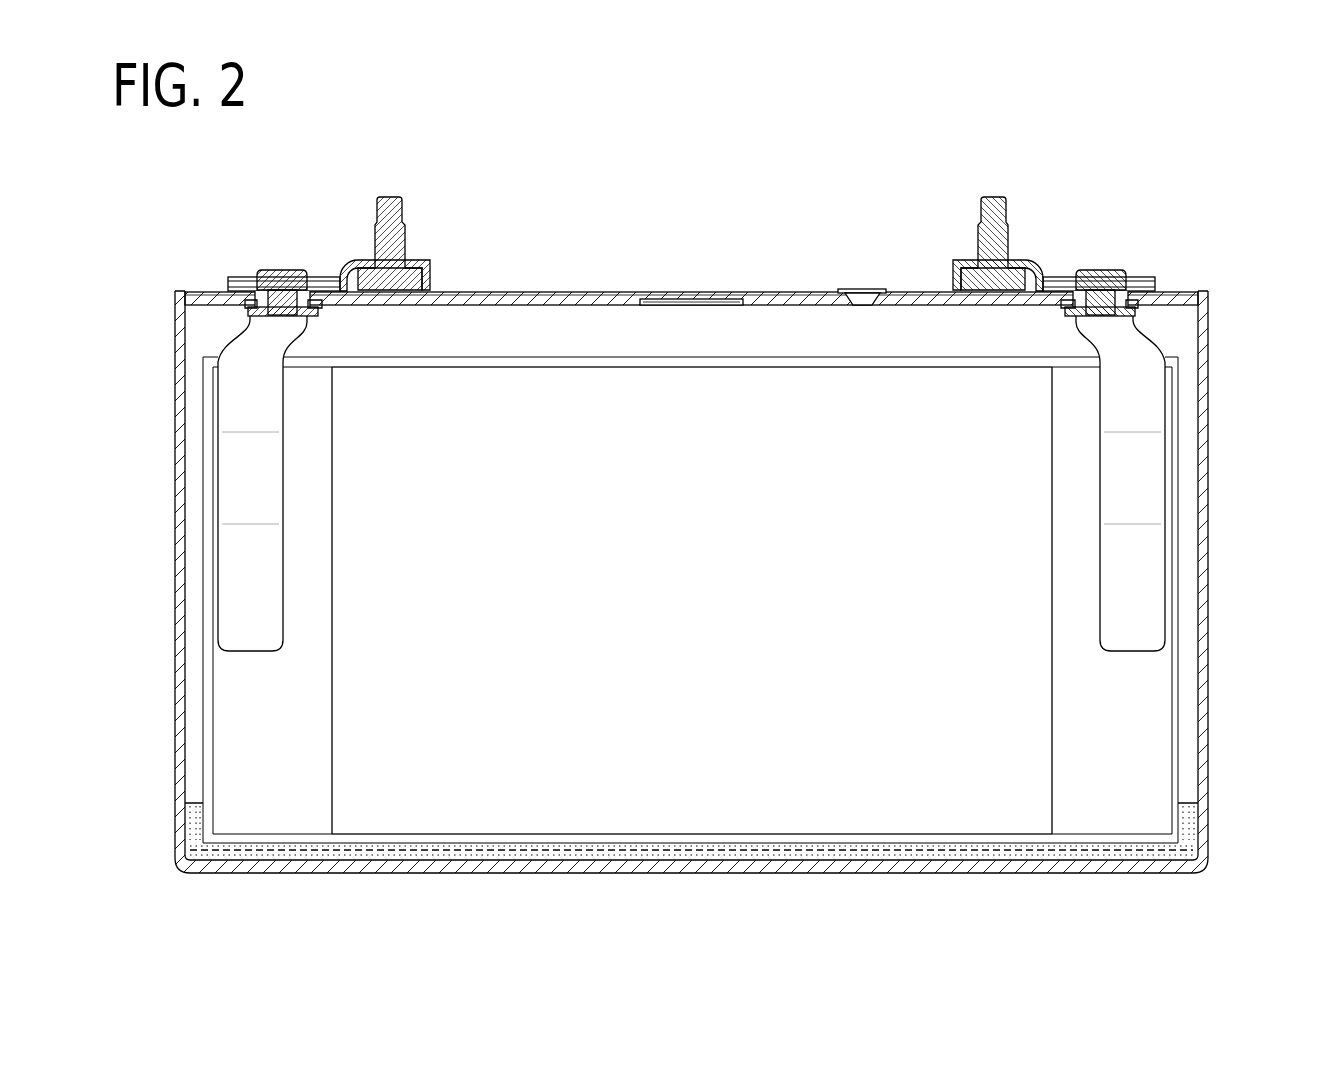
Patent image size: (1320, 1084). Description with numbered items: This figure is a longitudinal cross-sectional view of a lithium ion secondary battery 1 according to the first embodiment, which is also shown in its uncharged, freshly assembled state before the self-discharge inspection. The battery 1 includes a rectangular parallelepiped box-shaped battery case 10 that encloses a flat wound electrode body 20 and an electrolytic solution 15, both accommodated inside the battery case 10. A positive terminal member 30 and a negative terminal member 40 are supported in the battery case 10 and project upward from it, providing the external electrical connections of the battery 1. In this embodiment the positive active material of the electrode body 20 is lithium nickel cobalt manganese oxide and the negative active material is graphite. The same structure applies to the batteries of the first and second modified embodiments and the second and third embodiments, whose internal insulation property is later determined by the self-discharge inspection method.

The lithium ion secondary battery 1 is at (1130, 234).
The battery case 10 is at (560, 292).
The electrolytic solution 15 is at (650, 782).
The flat wound electrode body 20 is at (995, 792).
The positive terminal member 30 is at (376, 226).
The negative terminal member 40 is at (1008, 224).